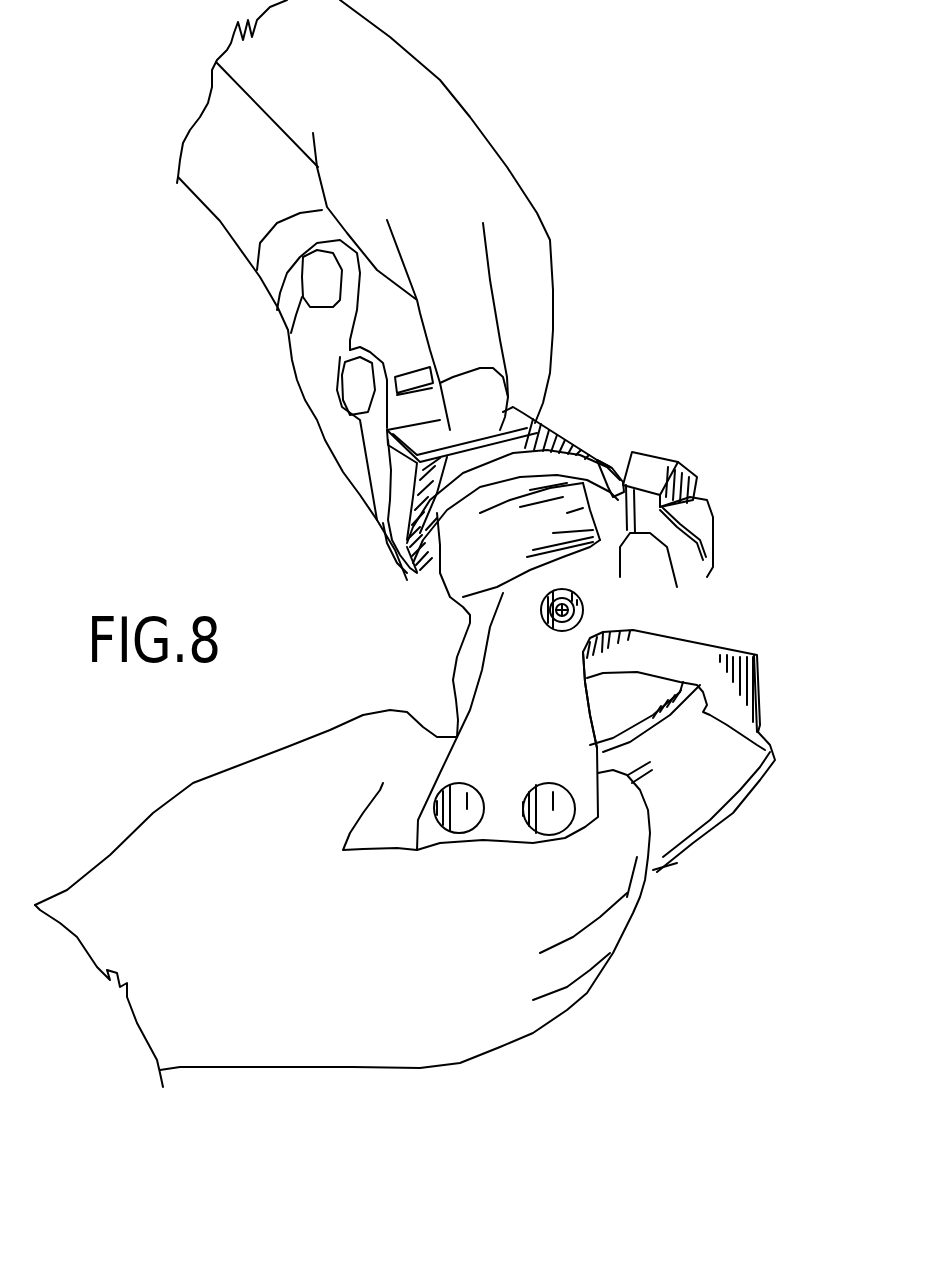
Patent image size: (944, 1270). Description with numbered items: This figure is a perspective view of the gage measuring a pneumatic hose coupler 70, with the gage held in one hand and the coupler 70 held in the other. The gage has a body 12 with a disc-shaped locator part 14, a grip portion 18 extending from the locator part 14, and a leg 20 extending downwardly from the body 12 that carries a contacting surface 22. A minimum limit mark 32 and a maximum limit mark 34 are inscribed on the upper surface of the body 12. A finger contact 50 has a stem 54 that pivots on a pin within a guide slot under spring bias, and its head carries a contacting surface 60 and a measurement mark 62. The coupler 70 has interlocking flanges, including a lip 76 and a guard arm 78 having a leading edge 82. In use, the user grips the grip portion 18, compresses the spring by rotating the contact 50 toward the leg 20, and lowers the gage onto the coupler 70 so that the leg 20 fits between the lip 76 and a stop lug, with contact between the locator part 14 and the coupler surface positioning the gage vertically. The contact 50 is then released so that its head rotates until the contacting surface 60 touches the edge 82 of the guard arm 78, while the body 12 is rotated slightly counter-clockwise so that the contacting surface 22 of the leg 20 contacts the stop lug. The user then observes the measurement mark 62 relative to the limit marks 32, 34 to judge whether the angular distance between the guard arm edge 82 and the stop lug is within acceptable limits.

The body 12 is at (438, 667).
The locator part 14 is at (620, 715).
The grip portion 18 is at (513, 643).
The leg 20 is at (743, 645).
The contacting surface 22 is at (740, 645).
The minimum limit mark 32 is at (664, 581).
The maximum limit mark 34 is at (590, 607).
The finger contact 50 is at (701, 442).
The stem 54 is at (575, 613).
The contacting surface 60 is at (622, 483).
The measurement mark 62 is at (695, 507).
The pneumatic hose coupler 70 is at (553, 420).
The lip 76 is at (703, 820).
The guard arm 78 is at (398, 498).
The leading edge 82 is at (612, 486).